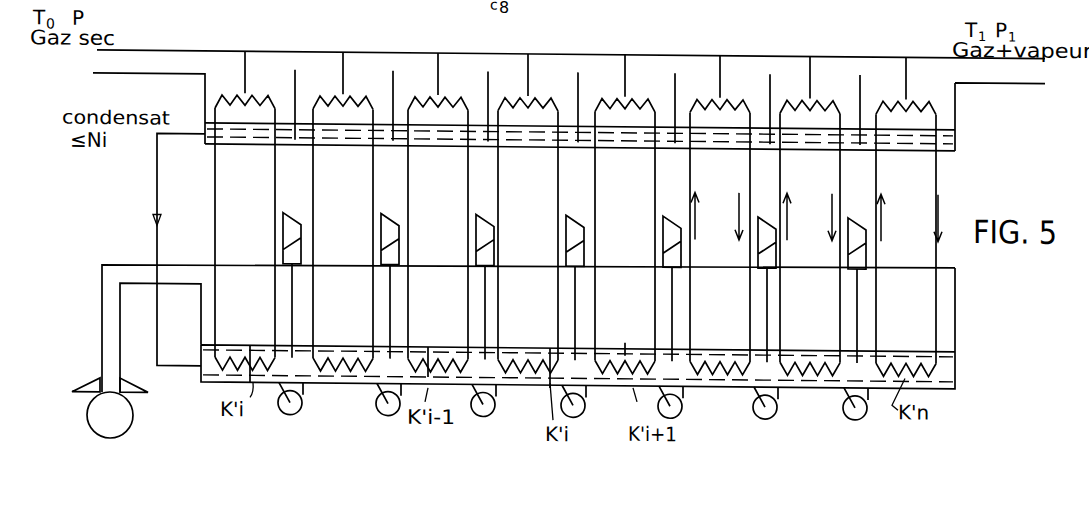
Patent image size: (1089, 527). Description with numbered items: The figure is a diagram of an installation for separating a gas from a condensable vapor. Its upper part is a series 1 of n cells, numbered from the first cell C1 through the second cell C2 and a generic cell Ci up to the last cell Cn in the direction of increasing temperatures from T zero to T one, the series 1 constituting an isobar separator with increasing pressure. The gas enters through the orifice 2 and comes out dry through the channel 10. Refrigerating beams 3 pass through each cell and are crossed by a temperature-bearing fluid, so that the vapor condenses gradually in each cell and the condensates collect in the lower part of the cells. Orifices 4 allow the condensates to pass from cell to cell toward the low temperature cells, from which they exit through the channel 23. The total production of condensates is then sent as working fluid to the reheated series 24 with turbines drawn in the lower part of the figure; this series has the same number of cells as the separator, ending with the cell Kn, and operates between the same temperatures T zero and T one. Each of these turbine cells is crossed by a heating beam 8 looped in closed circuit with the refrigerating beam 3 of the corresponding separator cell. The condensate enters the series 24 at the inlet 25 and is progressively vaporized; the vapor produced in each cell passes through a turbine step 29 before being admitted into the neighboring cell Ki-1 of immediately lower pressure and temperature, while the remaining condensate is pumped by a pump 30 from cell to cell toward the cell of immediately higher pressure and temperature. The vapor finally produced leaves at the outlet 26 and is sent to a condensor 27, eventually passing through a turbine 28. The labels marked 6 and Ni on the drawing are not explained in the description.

The series of cells 1 is at (587, 49).
The orifice 2 is at (995, 64).
The refrigerating beams 3 is at (423, 49).
The orifices 4 is at (858, 140).
The cell 6 is at (619, 2).
The heating beam 8 is at (508, 380).
The channel 10 is at (135, 51).
The channel 23 is at (180, 135).
The reheated series with turbines 24 is at (537, 380).
The condensate inlet 25 is at (180, 362).
The vapor outlet 26 is at (175, 268).
The condensor 27 is at (100, 406).
The turbine 28 is at (91, 384).
The turbine step 29 is at (478, 212).
The pump 30 is at (585, 405).
The first cell C1 is at (232, 73).
The second cell C2 is at (334, 72).
The i-th cell Ci is at (438, 200).
The n-th cell Cn is at (906, 204).
The level Ni is at (632, 116).
The cell of immediately lower pressure/temperature Ki-1 is at (406, 7).
The n-th turbine cell Kn is at (840, 0).